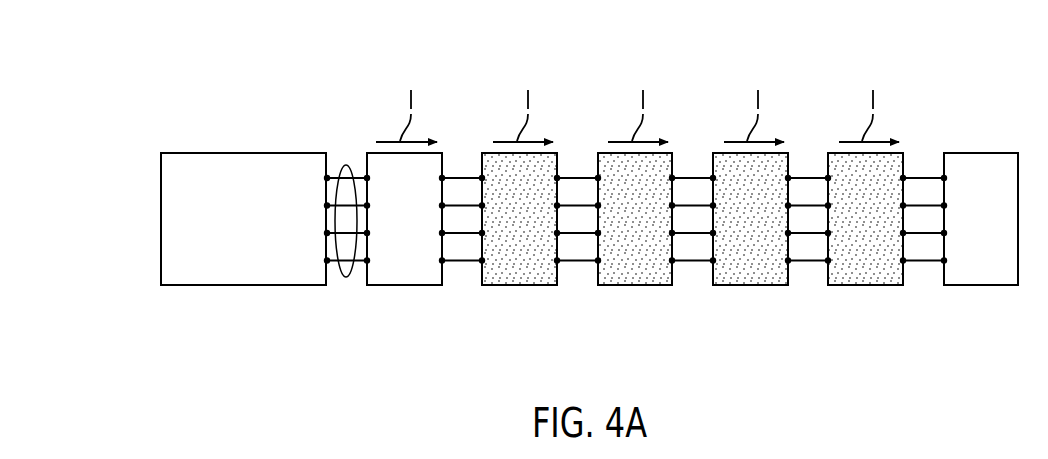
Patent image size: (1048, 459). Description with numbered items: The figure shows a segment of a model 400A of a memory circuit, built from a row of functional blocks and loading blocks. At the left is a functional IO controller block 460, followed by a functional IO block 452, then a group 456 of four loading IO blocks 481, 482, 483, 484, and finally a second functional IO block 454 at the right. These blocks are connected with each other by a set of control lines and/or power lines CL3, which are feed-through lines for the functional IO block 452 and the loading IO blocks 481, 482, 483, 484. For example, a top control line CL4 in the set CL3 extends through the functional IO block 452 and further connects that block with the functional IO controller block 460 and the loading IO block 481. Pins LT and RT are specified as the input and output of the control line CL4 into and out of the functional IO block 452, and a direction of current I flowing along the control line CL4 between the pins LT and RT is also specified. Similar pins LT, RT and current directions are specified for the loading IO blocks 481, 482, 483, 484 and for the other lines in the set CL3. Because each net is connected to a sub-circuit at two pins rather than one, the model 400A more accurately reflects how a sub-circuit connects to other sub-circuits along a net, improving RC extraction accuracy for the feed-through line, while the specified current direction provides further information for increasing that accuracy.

The model 400A is at (818, 72).
The functional IO controller block 460 is at (250, 286).
The functional IO block 452 is at (403, 286).
The chain of intermediate stages 456 is at (671, 245).
The loading IO block 481 is at (522, 286).
The loading IO block 482 is at (637, 286).
The loading IO block 483 is at (753, 286).
The loading IO block 484 is at (865, 215).
The functional IO block 454 is at (980, 287).
The set of control lines and/or power lines CL3 is at (348, 165).
The control line CL4 is at (922, 175).